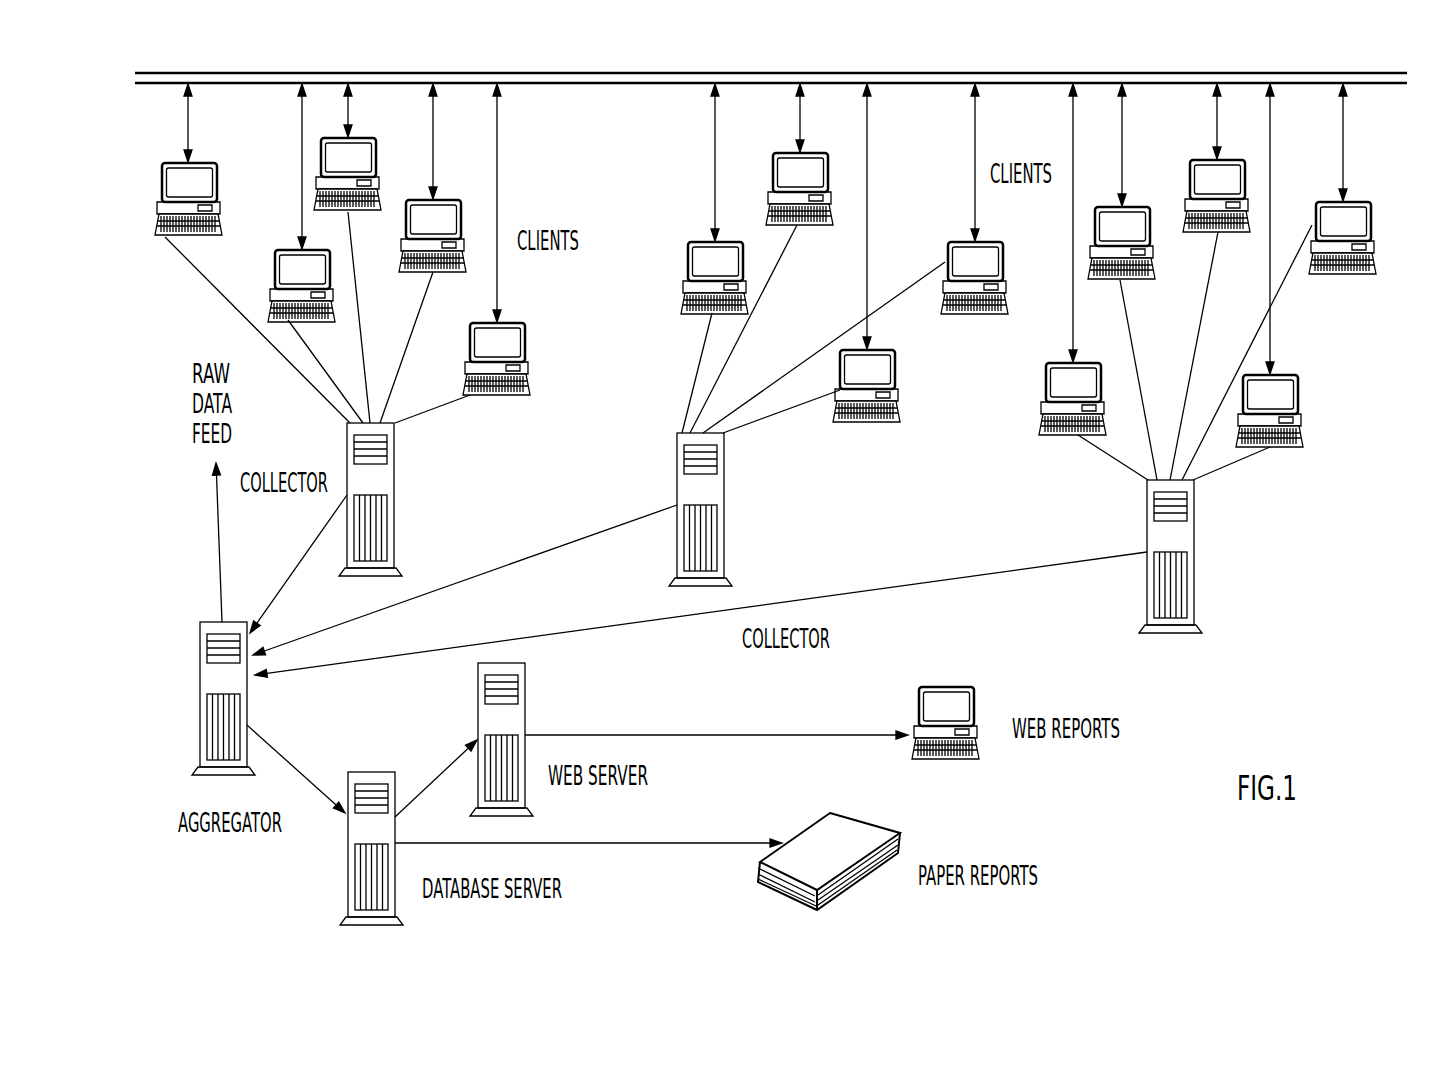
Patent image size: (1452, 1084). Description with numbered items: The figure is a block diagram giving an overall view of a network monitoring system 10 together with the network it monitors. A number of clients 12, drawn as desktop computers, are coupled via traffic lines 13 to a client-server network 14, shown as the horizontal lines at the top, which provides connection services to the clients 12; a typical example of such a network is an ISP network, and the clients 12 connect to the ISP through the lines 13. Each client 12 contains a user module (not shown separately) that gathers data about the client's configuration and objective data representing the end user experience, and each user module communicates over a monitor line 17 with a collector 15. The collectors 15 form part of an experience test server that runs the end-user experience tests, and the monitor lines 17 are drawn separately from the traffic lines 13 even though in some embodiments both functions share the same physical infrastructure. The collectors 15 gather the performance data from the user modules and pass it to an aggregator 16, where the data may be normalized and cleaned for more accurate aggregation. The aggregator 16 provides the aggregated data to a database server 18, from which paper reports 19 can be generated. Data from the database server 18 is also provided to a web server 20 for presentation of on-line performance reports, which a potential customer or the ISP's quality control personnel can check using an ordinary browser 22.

The network monitoring system 10 is at (1403, 162).
The client 12 is at (205, 163).
The traffic line 13 is at (189, 132).
The client-server network 14 is at (582, 83).
The collector 15 is at (395, 523).
The aggregator 16 is at (200, 704).
The monitor line 17 is at (220, 299).
The database server 18 is at (395, 830).
The paper reports 19 is at (863, 822).
The web server 20 is at (525, 710).
The browser 22 is at (978, 697).